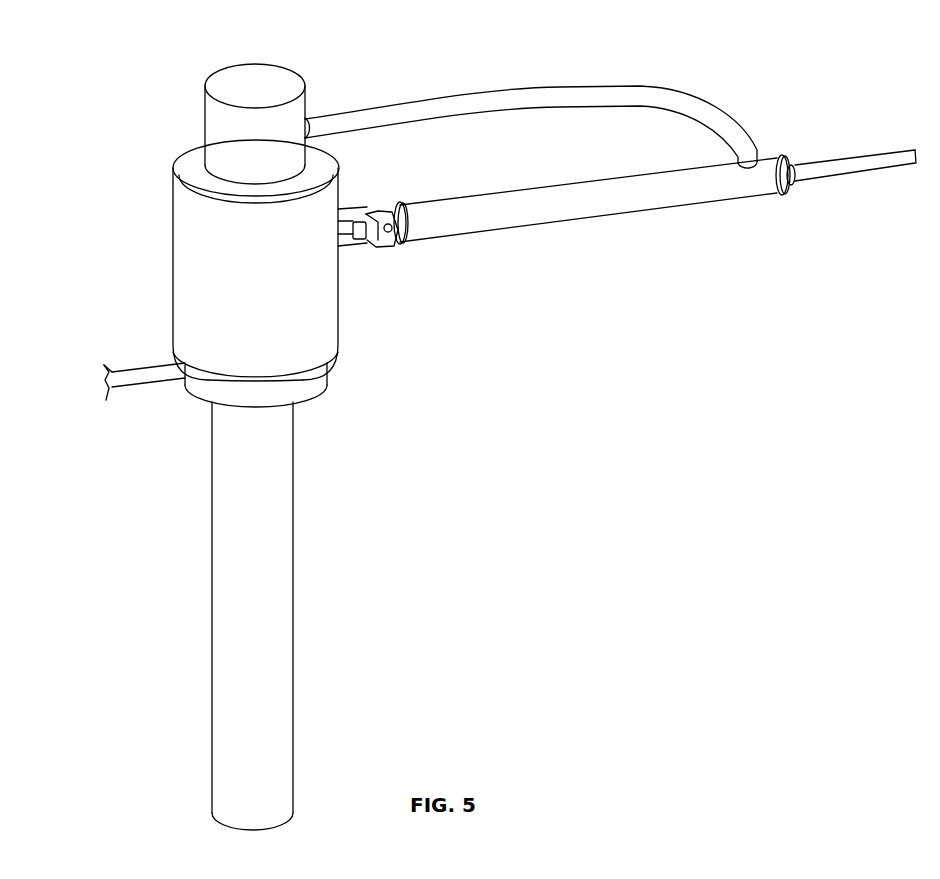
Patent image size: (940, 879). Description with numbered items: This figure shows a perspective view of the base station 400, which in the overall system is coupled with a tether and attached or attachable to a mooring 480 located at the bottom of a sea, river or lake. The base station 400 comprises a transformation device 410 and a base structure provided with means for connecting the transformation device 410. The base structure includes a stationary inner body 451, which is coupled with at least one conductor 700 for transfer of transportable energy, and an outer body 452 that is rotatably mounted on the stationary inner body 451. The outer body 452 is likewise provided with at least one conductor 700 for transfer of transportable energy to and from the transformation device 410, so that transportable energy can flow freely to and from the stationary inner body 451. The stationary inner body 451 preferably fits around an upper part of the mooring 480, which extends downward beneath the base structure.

The downhole tool assembly 400 is at (50, 77).
The pipe / conduit 410 is at (616, 178).
The housing collar 451 is at (328, 373).
The upper cylindrical cap 452 is at (187, 156).
The pole / mandrel 480 is at (293, 630).
The hose / tubing 700 is at (513, 90).